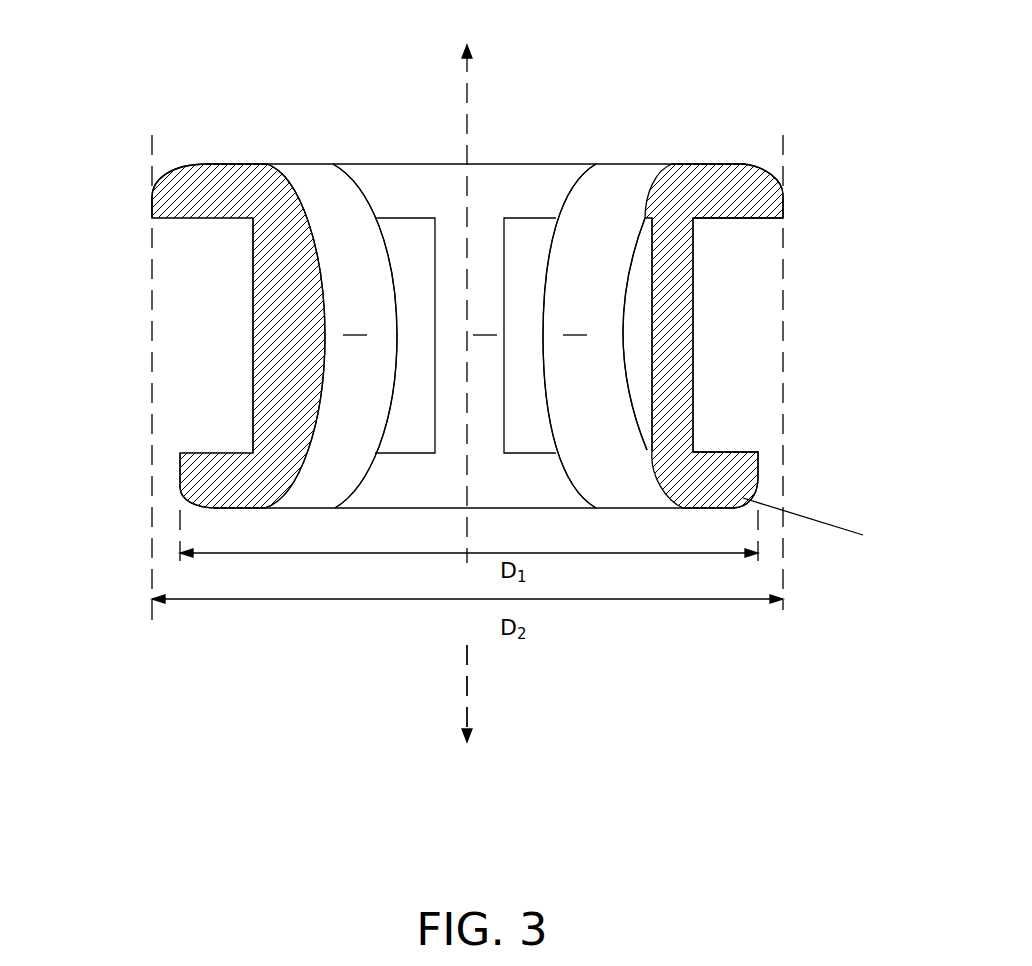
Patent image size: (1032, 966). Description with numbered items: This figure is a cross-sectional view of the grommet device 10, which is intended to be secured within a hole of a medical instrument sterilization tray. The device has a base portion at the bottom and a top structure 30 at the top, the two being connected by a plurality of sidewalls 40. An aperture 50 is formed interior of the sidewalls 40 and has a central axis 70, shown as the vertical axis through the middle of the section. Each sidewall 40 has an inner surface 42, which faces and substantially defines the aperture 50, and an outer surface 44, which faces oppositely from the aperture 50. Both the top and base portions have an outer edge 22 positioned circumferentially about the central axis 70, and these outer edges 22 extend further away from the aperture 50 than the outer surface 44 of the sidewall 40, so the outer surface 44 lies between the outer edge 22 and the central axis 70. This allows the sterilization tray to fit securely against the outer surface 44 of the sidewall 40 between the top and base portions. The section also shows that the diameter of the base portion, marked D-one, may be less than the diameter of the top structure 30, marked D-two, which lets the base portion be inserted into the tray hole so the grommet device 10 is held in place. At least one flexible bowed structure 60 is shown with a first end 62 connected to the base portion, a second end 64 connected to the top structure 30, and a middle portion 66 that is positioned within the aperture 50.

The grommet device 10 is at (606, 27).
The outer edge 22 is at (153, 197).
The top structure 30 is at (720, 162).
The sidewalls 40 is at (450, 245).
The inner surface 42 is at (656, 396).
The outer surface 44 is at (687, 352).
The aperture 50 is at (508, 149).
The flexible bowed structure 60 is at (230, 310).
The first end 62 is at (332, 480).
The second end 64 is at (342, 208).
The middle portion 66 is at (456, 336).
The central axis 70 is at (468, 691).